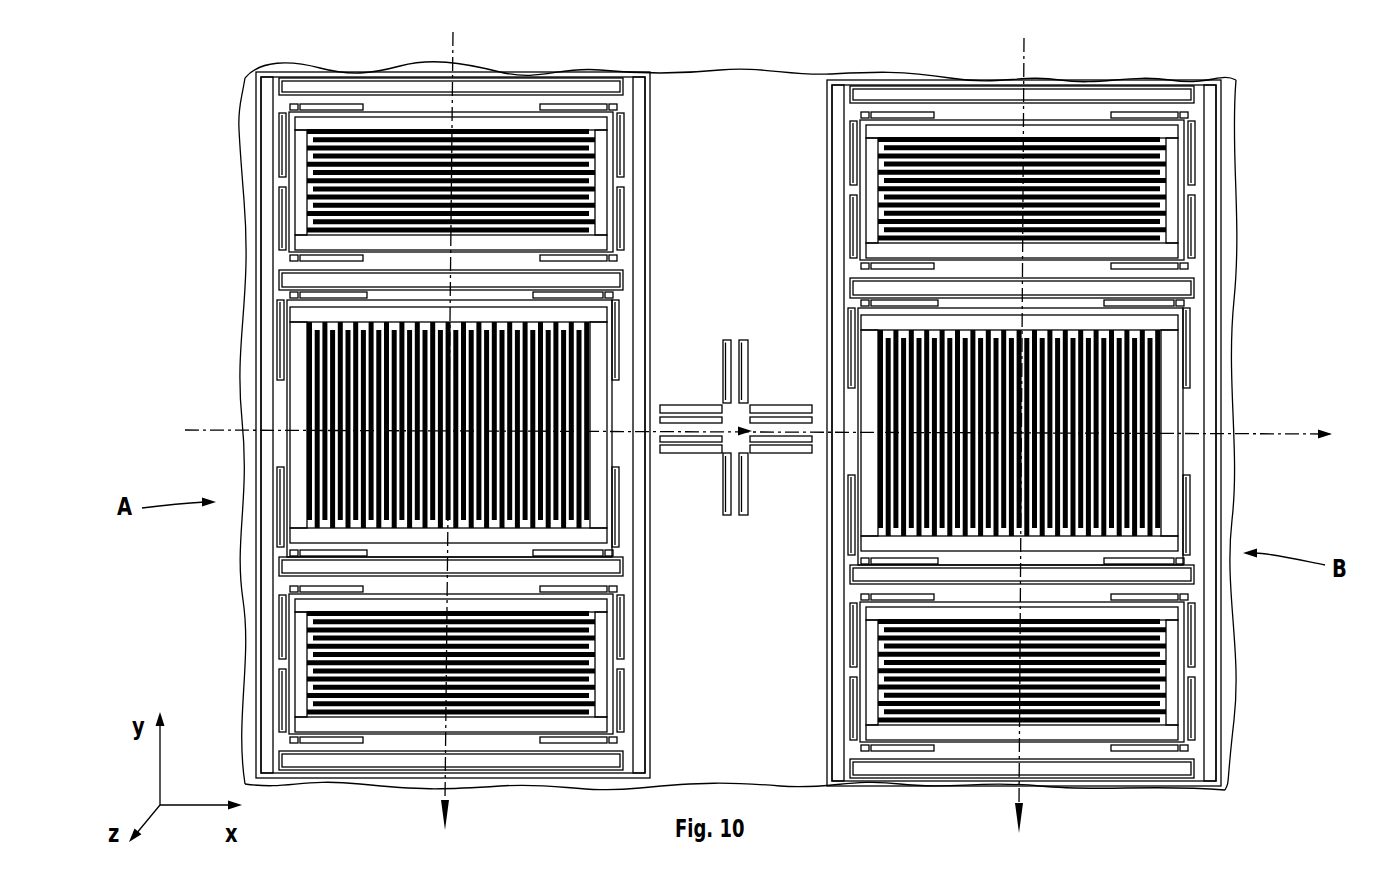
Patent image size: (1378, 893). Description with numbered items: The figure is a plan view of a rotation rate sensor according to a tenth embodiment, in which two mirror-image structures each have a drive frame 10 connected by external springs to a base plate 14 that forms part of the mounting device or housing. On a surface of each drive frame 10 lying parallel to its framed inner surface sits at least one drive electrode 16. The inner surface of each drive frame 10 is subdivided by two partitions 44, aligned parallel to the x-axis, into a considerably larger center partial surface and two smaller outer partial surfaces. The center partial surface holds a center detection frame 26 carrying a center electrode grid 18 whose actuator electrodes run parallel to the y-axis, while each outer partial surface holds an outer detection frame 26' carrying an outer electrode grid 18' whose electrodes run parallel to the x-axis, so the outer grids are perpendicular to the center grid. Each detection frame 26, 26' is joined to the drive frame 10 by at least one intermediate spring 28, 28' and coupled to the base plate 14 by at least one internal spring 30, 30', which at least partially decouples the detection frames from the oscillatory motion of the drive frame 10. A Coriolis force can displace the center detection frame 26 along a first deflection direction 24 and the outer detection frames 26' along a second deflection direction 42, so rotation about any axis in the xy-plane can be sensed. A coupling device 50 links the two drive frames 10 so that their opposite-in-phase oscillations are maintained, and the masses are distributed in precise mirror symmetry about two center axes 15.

The drive frame 10 is at (490, 752).
The base plate 14 is at (772, 130).
The center axes 15 is at (452, 40).
The drive electrode 16 is at (290, 280).
The center electrode grid 18 is at (736, 429).
The outer electrode grid 18' is at (673, 436).
The first deflection direction 24 is at (712, 428).
The center detection frame 26 is at (736, 432).
The outer detection frame 26' is at (739, 433).
The intermediate spring 28 is at (733, 412).
The intermediate spring 28' is at (738, 426).
The internal spring 30 is at (737, 428).
The internal spring 30' is at (739, 434).
The second deflection direction 42 is at (440, 797).
The partition 44 is at (278, 272).
The coupling device 50 is at (737, 542).